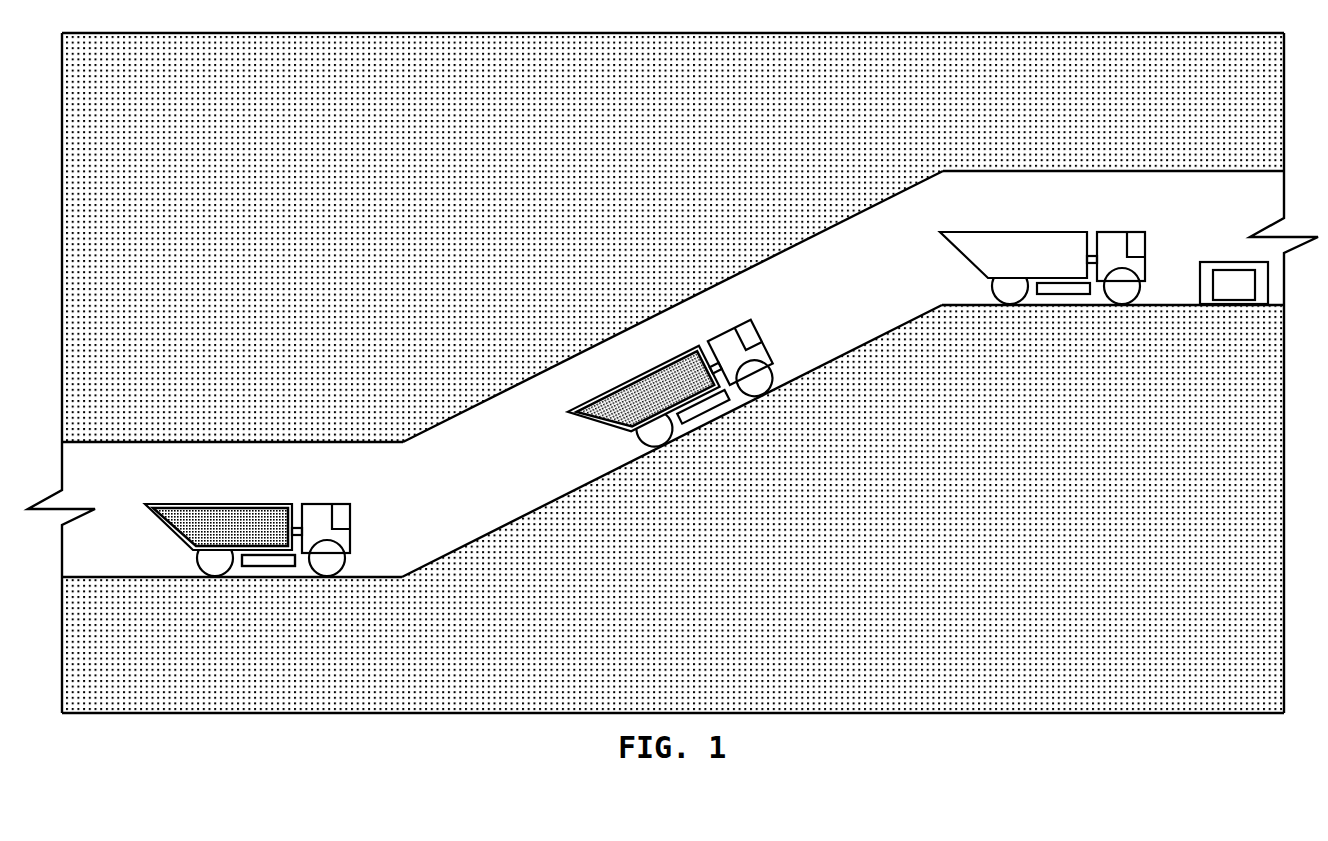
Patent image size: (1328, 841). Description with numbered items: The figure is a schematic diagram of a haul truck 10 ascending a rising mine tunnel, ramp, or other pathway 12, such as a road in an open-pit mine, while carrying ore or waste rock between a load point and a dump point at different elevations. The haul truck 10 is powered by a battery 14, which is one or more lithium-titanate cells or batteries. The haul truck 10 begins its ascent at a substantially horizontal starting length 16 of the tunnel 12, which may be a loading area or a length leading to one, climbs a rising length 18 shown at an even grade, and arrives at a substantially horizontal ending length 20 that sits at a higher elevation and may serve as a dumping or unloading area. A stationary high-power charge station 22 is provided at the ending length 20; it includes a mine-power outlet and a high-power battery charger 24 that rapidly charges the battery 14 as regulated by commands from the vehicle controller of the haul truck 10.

The haul truck 10 is at (318, 488).
The tunnel 12 is at (866, 314).
The battery 14 is at (273, 566).
The starting length 16 is at (230, 474).
The rising length 18 is at (809, 280).
The ending length 20 is at (1062, 214).
The charge station 22 is at (1226, 262).
The battery charger 24 is at (1244, 296).